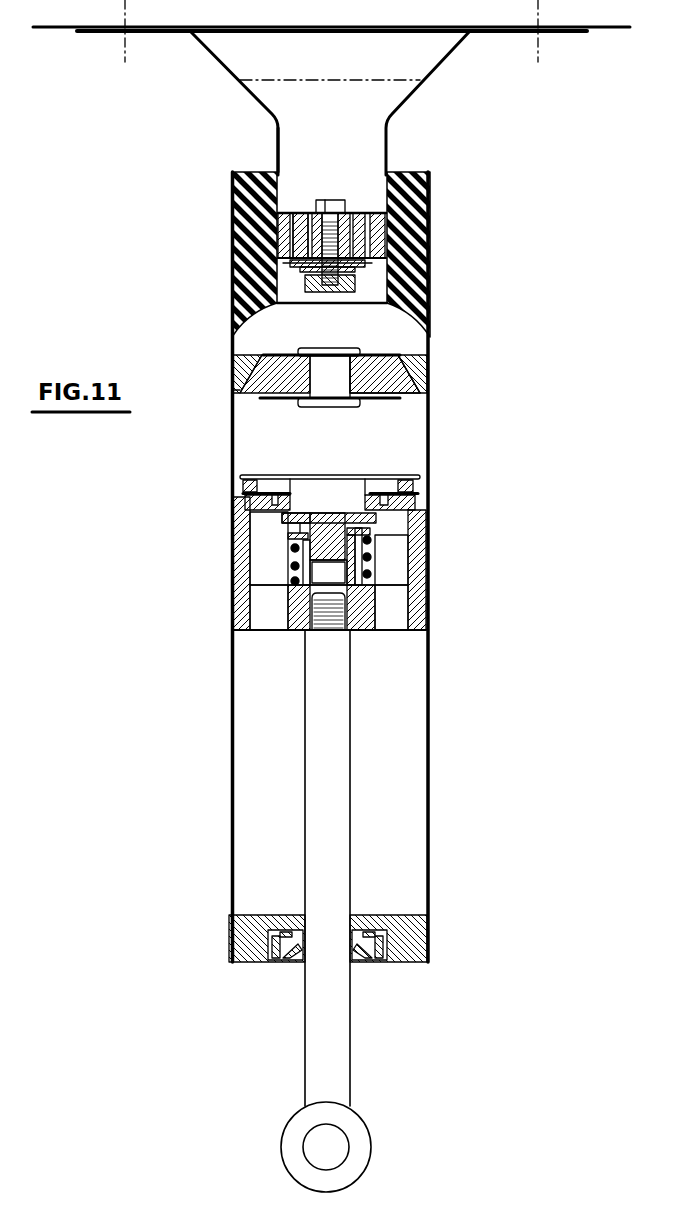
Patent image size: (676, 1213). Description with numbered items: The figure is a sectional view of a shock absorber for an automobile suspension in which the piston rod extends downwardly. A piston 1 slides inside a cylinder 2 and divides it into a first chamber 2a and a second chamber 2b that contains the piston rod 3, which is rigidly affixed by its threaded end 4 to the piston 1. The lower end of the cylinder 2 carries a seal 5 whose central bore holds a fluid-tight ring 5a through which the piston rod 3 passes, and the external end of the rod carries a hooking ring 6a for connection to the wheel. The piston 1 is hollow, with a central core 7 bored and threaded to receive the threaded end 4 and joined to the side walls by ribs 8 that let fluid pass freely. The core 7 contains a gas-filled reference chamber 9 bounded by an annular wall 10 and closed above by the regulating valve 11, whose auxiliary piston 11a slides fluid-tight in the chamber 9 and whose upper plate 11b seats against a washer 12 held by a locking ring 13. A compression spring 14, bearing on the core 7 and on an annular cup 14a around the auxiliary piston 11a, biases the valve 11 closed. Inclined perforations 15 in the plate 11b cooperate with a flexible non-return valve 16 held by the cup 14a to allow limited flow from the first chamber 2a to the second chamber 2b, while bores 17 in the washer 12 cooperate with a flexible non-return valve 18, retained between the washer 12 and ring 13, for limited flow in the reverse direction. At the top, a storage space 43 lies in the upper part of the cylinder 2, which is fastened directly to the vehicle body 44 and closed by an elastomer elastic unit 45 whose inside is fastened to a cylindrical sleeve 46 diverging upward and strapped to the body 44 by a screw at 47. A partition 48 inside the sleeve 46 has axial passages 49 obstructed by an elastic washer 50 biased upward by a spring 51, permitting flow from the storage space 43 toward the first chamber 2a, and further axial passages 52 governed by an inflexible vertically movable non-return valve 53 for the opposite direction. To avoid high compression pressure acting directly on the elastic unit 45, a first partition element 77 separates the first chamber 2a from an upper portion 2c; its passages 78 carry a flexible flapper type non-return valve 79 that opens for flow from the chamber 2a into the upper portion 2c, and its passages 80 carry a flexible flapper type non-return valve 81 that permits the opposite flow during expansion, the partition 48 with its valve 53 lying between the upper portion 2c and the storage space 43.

The piston 1 is at (415, 595).
The cylinder 2 is at (434, 700).
The first chamber 2a is at (380, 452).
The second chamber 2b is at (377, 792).
The upper portion of the first chamber 2c is at (368, 330).
The piston rod 3 is at (322, 763).
The threaded end 4 is at (330, 613).
The seal 5 is at (402, 940).
The fluid-tight ring 5a is at (370, 960).
The hooking ring 6a is at (357, 1140).
The central core 7 is at (300, 615).
The ribs 8 is at (268, 609).
The reference chamber 9 is at (328, 575).
The annular wall 10 is at (292, 573).
The regulating valve 11 is at (340, 482).
The auxiliary piston 11a is at (332, 550).
The upper plate 11b is at (372, 508).
The washer 12 is at (243, 497).
The locking ring 13 is at (234, 476).
The compression spring 14 is at (362, 575).
The annular cup 14a is at (352, 533).
The perforations 15 is at (283, 518).
The flexible non-return valve 16 is at (300, 528).
The bores 17 is at (272, 480).
The flexible non-return valve 18 is at (294, 482).
The storage space 43 is at (393, 60).
The vehicle body 44 is at (64, 33).
The elastomer elastic unit 45 is at (258, 207).
The cylindrical sleeve 46 is at (275, 145).
The screw 47 is at (127, 58).
The partition 48 is at (390, 245).
The axial passages 49 is at (292, 242).
The elastic washer 50 is at (300, 275).
The spring 51 is at (305, 272).
The axial passages 52 is at (350, 230).
The non-return valve 53 is at (360, 212).
The first partition element 77 is at (262, 407).
The passages 78 is at (245, 366).
The flexible flapper type non-return valve 79 is at (280, 352).
The passages 80 is at (410, 364).
The flexible flapper type non-return valve 81 is at (383, 400).